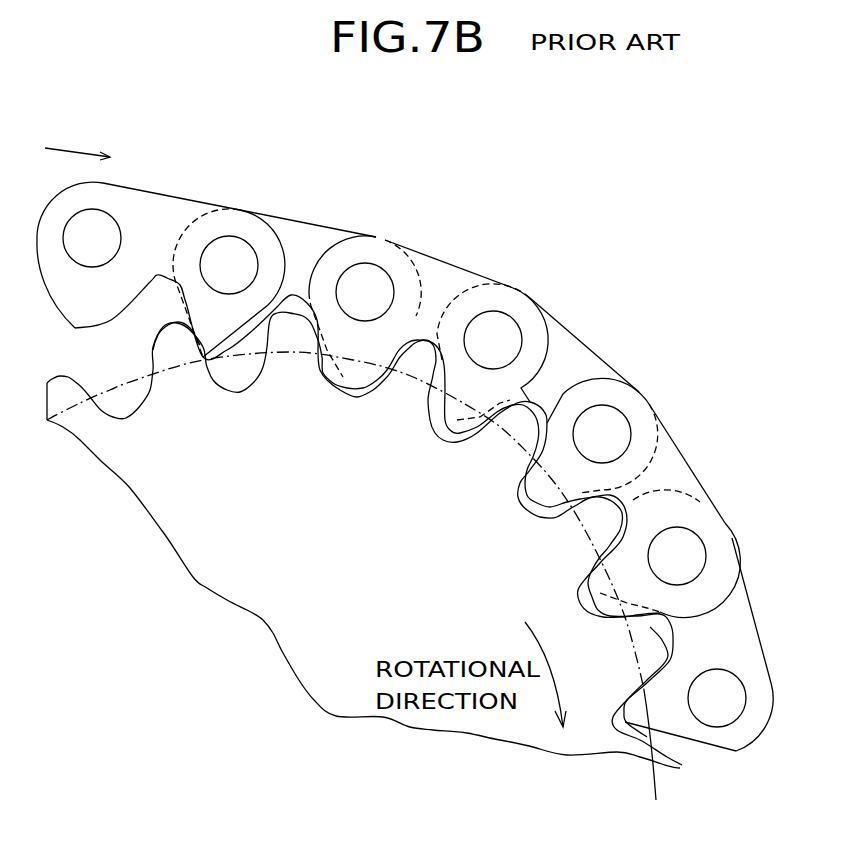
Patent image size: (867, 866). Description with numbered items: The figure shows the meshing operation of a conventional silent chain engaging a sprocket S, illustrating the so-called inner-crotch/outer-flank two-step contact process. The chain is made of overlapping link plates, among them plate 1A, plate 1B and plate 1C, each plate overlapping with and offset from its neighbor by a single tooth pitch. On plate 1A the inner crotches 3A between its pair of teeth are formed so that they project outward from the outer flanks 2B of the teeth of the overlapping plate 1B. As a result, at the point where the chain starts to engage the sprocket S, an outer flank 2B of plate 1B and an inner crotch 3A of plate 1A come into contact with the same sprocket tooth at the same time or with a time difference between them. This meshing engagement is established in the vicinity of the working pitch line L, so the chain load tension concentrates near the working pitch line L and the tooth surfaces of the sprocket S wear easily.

The plate 1A is at (178, 194).
The plate 1B is at (327, 225).
The link plate 1C is at (474, 271).
The outer flank 2B is at (197, 362).
The inner crotch 3A is at (213, 343).
The sprocket S is at (392, 538).
The working pitch line L is at (650, 773).